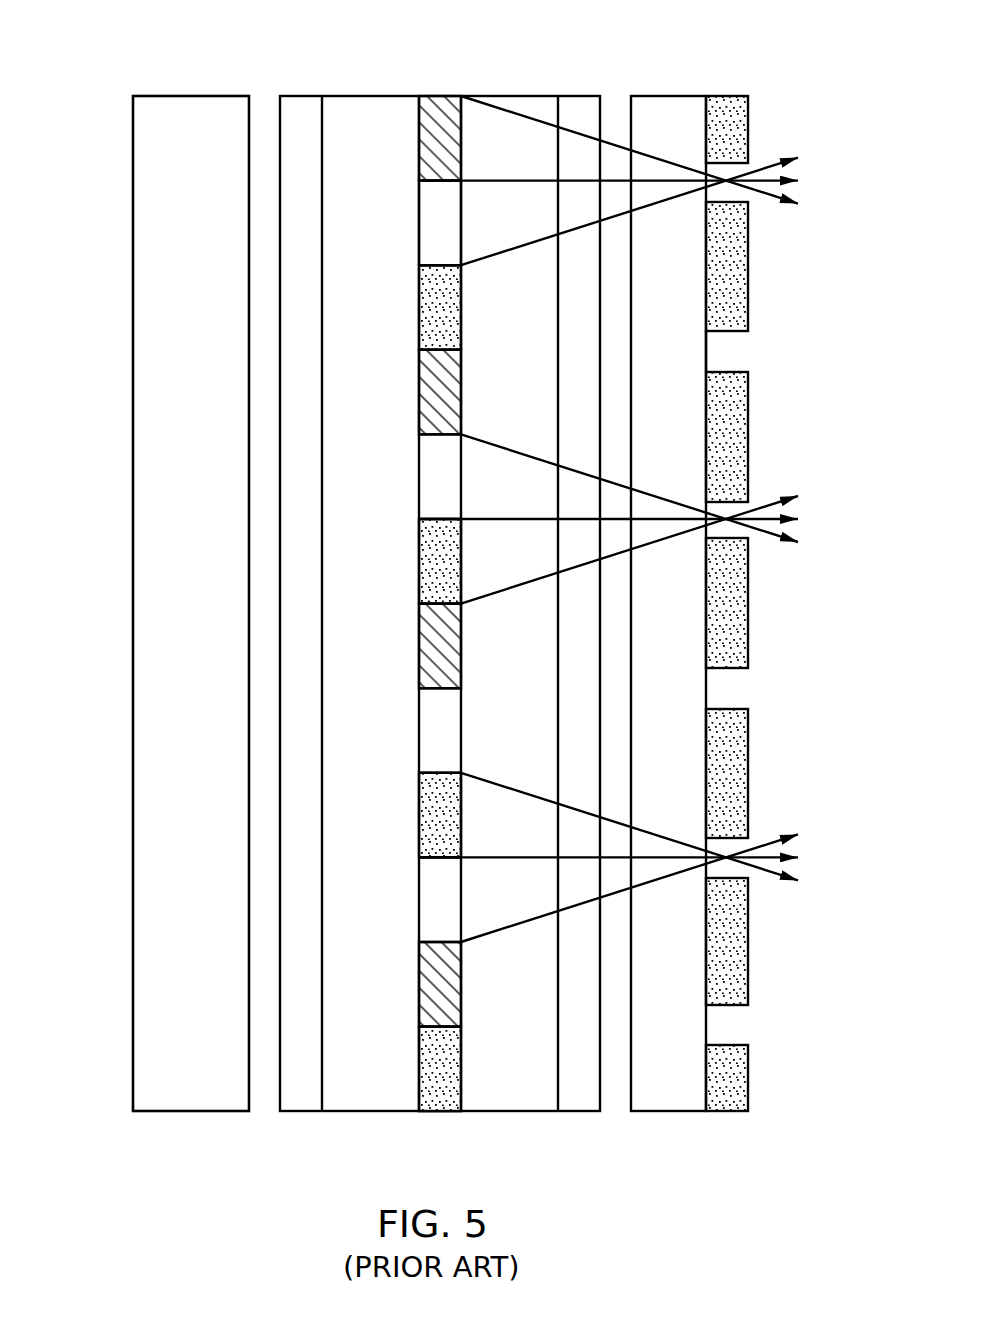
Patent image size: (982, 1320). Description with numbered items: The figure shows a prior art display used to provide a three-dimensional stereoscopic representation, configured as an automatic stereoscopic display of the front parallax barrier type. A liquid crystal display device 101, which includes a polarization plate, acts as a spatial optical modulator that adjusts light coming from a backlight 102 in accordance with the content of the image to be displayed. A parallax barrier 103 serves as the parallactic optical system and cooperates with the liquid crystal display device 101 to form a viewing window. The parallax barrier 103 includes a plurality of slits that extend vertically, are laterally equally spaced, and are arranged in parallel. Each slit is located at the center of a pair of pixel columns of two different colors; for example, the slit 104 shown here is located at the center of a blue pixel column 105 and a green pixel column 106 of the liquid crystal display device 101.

The liquid crystal display device 101 is at (448, 96).
The backlight 102 is at (133, 580).
The parallax barrier 103 is at (731, 96).
The slit 104 is at (738, 355).
The blue pixel column 105 is at (419, 145).
The green pixel column 106 is at (419, 226).